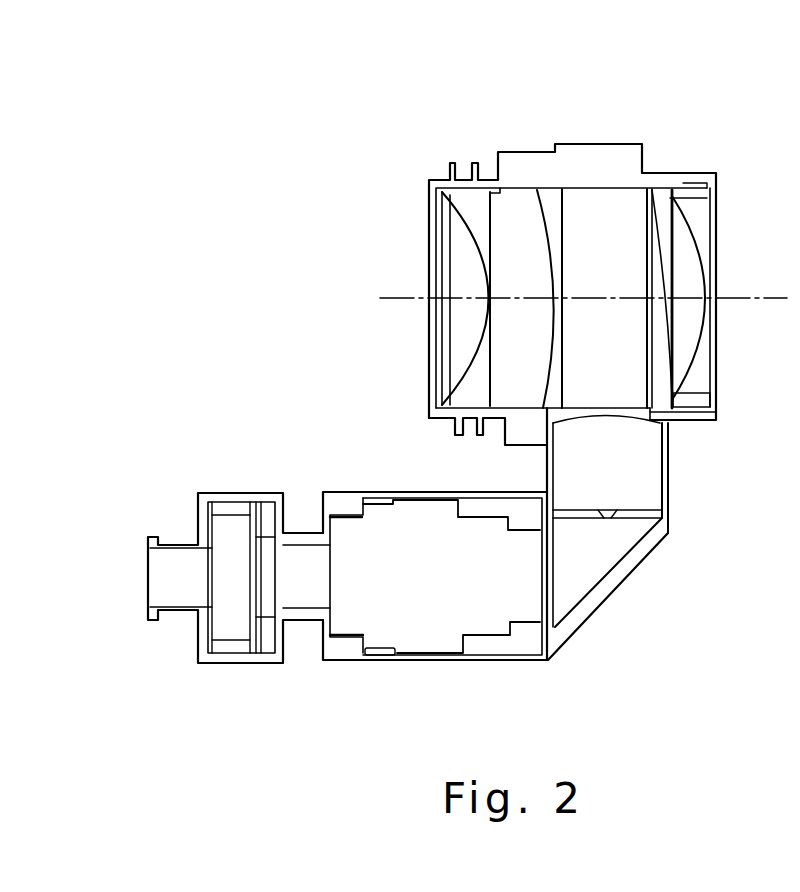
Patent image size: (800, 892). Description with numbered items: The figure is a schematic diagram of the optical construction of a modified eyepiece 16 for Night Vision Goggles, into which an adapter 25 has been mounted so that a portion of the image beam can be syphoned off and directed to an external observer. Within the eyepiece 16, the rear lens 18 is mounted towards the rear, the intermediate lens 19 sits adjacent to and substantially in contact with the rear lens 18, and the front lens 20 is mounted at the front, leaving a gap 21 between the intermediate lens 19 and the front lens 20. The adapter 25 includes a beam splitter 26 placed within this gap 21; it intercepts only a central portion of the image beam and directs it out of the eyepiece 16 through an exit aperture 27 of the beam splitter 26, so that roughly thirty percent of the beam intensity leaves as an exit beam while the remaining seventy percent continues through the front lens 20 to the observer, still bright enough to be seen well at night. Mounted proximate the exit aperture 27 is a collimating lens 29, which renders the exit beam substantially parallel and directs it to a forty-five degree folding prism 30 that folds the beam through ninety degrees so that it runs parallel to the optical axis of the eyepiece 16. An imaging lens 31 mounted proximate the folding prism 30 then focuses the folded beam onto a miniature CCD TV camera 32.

The eyepiece 16 is at (418, 372).
The rear lens 18 is at (447, 253).
The intermediate lens 19 is at (540, 346).
The front lens 20 is at (687, 278).
The gap 21 is at (546, 193).
The adapter 25 is at (606, 616).
The beam splitter 26 is at (598, 203).
The exit aperture 27 is at (672, 421).
The collimating lens 29 is at (640, 487).
The folding prism 30 is at (597, 560).
The imaging lens 31 is at (410, 664).
The miniature CCD TV camera 32 is at (230, 665).